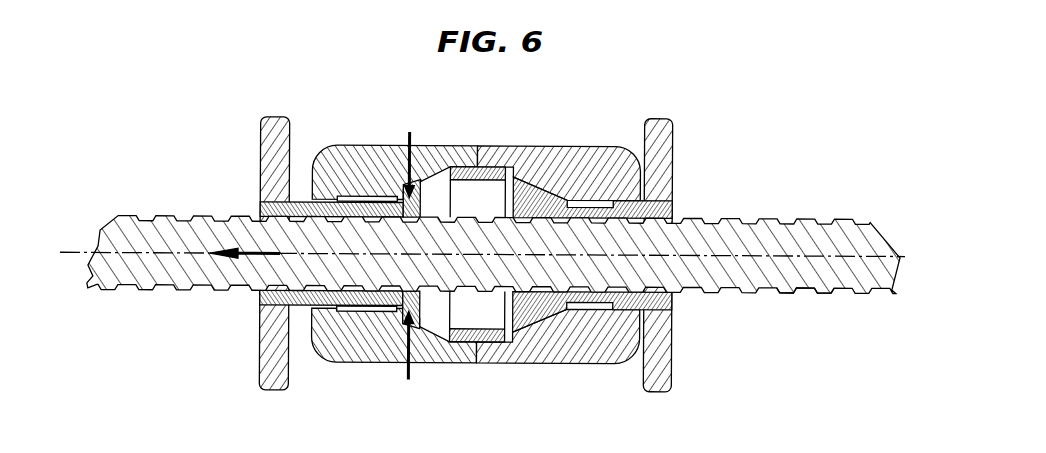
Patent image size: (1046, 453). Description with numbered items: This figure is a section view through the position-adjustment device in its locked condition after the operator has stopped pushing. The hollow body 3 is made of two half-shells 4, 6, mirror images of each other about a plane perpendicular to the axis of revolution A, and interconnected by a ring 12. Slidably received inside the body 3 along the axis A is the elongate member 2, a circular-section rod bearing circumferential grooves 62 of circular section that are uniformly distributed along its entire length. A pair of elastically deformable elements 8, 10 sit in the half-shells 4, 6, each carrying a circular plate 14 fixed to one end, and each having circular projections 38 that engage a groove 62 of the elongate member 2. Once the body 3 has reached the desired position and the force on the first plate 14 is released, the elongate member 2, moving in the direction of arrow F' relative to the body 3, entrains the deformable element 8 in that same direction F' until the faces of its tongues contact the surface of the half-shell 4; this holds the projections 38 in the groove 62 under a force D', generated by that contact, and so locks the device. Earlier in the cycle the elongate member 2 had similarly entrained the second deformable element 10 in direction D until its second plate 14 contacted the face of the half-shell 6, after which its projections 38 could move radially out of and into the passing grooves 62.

The elongate member 2 is at (838, 226).
The hollow body 3 is at (476, 267).
The half-shell 4 is at (345, 147).
The half-shell 6 is at (587, 162).
The deformable element 8 is at (353, 306).
The deformable element 10 is at (525, 314).
The ring 12 is at (462, 343).
The plate 14 is at (260, 141).
The circular projections 38 is at (421, 217).
The circumferential grooves 62 is at (782, 292).
The axis of revolution A is at (75, 255).
The direction D is at (385, 367).
The force D' is at (385, 145).
The arrow F' is at (245, 213).